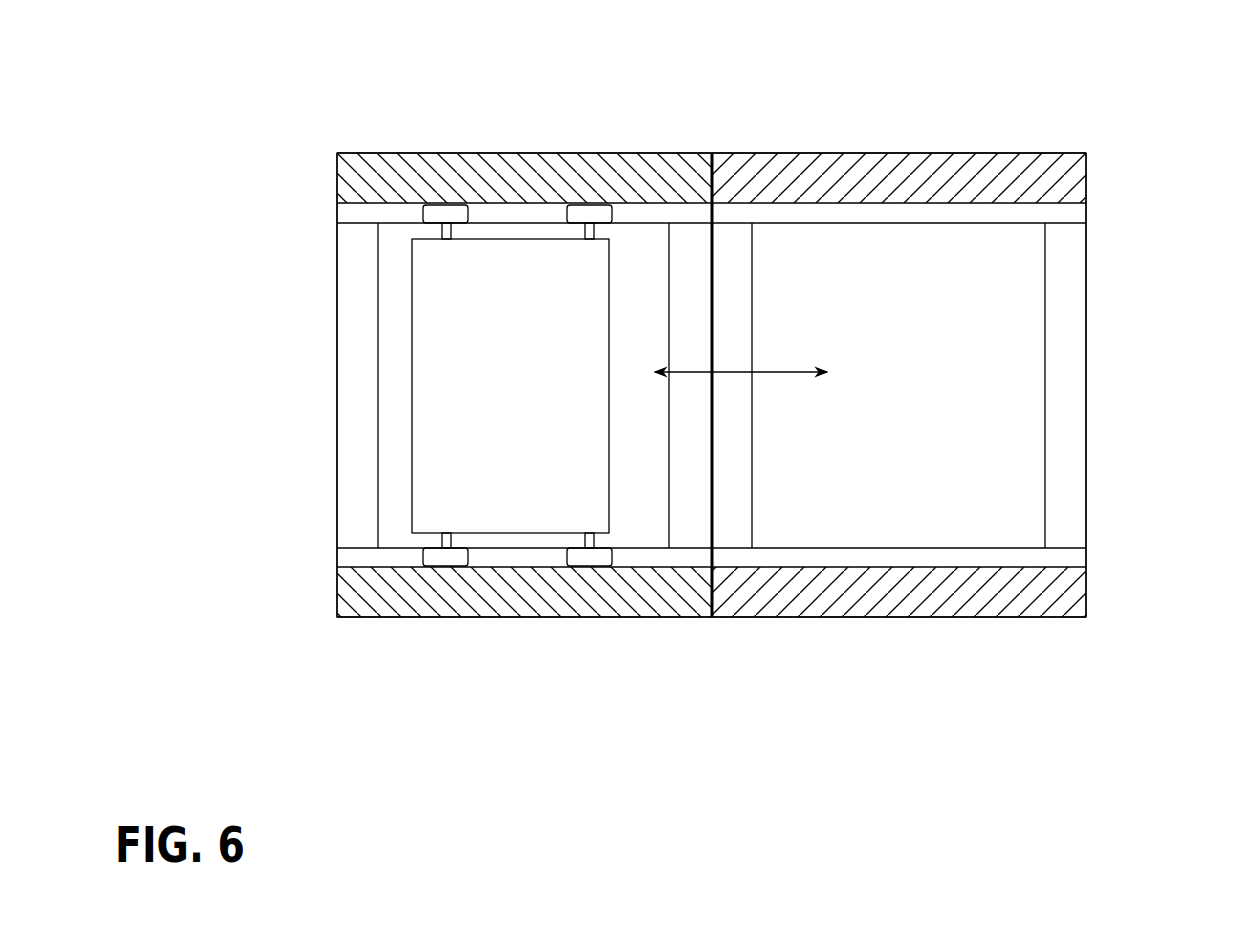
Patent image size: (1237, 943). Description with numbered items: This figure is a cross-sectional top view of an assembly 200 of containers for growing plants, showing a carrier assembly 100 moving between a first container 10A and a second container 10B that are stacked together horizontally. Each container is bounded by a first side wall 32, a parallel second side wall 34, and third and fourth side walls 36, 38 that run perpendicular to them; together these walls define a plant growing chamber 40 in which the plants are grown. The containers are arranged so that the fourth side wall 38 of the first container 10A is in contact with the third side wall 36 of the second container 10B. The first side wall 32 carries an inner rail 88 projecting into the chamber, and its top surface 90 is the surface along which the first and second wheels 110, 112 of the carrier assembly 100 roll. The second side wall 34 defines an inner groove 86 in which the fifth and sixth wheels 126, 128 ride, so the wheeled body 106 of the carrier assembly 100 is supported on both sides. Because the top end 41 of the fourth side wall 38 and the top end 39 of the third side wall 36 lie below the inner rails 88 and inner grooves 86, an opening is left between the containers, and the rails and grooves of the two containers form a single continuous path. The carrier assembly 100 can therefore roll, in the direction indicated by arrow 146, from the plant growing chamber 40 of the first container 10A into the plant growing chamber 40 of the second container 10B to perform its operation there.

The assembly of containers 200 is at (262, 108).
The first container 10A is at (540, 142).
The second container 10B is at (900, 142).
The first side wall 32 is at (417, 598).
The second side wall 34 is at (402, 155).
The third side wall 36 is at (337, 345).
The fourth side wall 38 is at (669, 397).
The top end of the third side wall 39 is at (352, 473).
The plant growing chamber 40 is at (711, 385).
The top end of the fourth side wall 41 is at (685, 340).
The inner groove 86 is at (337, 212).
The inner rail 88 is at (337, 558).
The top surface of the inner rail 90 is at (637, 558).
The carrier assembly 100 is at (612, 465).
The insert body 106 is at (440, 407).
The first wheel 110 is at (440, 555).
The second wheel 112 is at (590, 555).
The fifth wheel 126 is at (445, 213).
The sixth wheel 128 is at (590, 213).
The lateral movement direction 146 is at (790, 370).